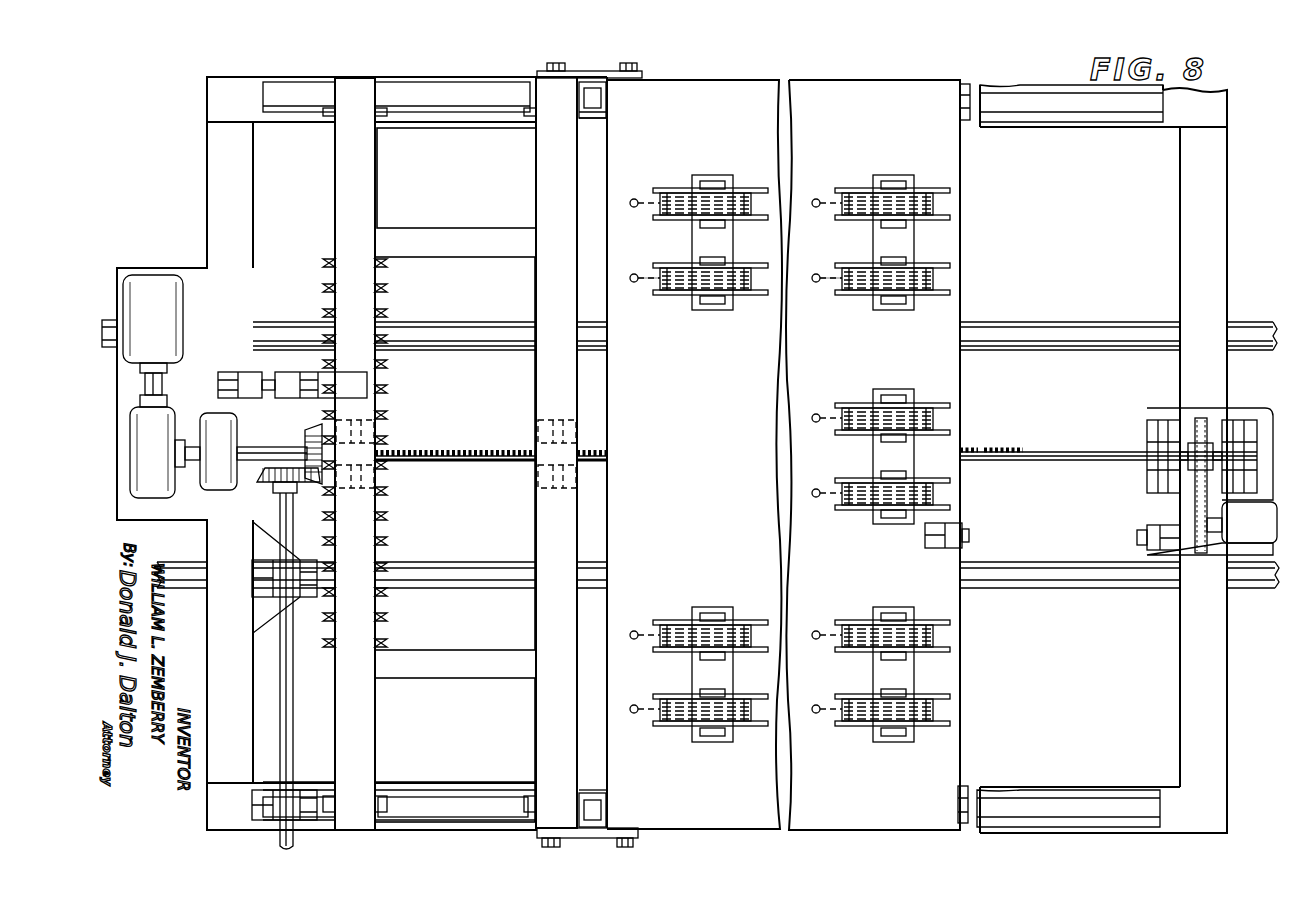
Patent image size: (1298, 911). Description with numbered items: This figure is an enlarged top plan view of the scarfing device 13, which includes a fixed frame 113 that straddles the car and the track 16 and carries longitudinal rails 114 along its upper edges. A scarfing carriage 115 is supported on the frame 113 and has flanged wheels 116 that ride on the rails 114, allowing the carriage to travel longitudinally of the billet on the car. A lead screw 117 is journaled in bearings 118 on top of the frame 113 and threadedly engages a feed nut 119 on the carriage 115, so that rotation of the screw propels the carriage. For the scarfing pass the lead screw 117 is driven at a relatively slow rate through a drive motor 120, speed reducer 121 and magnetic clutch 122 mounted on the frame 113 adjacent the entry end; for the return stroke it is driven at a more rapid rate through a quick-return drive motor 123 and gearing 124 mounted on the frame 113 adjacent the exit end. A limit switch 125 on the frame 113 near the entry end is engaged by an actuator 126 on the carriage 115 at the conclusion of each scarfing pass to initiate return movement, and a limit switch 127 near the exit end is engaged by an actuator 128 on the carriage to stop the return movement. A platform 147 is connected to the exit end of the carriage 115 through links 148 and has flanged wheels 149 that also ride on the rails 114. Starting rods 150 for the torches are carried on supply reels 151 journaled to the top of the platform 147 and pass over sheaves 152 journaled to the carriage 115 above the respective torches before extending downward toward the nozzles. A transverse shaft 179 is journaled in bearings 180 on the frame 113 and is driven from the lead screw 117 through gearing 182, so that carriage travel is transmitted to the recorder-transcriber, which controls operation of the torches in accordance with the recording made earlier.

The scarfing device 13 is at (196, 193).
The fixed frame 113 is at (222, 160).
The longitudinal rails 114 is at (311, 105).
The scarfing carriage 115 is at (345, 201).
The flanged wheels 116 is at (380, 110).
The lead screw 117 is at (470, 462).
The bearings 118 is at (1162, 462).
The feed nut 119 is at (548, 460).
The drive motor 120 is at (142, 341).
The speed reducer 121 is at (165, 452).
The magnetic clutch 122 is at (253, 451).
The quick-return drive motor 123 is at (1249, 522).
The gearing 124 is at (1198, 420).
The limit switch 125 is at (245, 372).
The actuator 126 is at (287, 392).
The limit switch 127 is at (1150, 532).
The actuator 128 is at (956, 535).
The platform 147 is at (716, 500).
The links 148 is at (645, 76).
The flanged wheels 149 is at (604, 102).
The starting rods 150 is at (660, 282).
The supply reels 151 is at (750, 190).
The sheaves 152 is at (385, 312).
The track 16 is at (488, 342).
The transverse shaft 179 is at (292, 722).
The bearings 180 is at (270, 578).
The gearing 182 is at (268, 478).